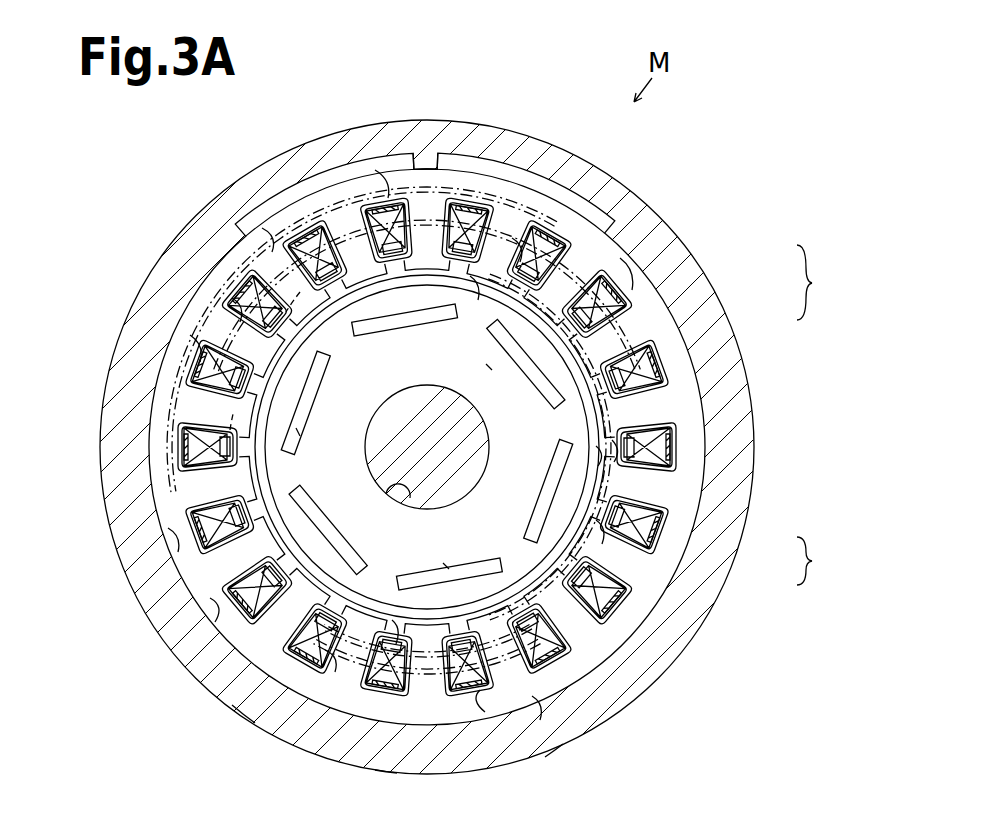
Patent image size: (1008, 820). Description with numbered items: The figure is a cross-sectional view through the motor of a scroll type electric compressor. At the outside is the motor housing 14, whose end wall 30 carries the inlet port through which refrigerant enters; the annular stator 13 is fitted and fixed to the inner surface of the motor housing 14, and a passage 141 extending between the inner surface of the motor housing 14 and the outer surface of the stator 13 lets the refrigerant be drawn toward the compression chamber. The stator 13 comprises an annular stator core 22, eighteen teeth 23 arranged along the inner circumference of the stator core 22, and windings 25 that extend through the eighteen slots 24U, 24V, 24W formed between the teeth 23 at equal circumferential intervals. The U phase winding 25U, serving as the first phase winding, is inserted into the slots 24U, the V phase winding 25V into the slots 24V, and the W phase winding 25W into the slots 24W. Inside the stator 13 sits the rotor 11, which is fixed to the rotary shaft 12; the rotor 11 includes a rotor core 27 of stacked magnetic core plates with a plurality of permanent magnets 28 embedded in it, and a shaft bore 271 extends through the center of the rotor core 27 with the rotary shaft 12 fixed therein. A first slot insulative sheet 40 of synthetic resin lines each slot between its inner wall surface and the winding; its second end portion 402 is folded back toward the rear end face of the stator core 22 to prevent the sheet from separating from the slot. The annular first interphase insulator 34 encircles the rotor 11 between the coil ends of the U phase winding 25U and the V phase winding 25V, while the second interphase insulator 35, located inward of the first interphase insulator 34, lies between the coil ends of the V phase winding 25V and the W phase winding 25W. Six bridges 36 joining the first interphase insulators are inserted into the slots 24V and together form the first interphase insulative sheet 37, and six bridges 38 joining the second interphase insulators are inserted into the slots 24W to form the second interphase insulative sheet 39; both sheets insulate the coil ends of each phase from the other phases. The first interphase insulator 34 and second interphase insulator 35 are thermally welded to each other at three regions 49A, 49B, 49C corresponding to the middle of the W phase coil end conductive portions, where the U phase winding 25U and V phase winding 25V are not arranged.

The rotor 11 is at (558, 444).
The rotary shaft 12 is at (418, 388).
The stator 13 is at (446, 445).
The motor housing 14 is at (735, 393).
The stator core 22 is at (640, 305).
The teeth 23 is at (428, 282).
The slot 24U is at (385, 195).
The slot 24V is at (518, 240).
The slot 24W is at (240, 300).
The windings 25 is at (425, 445).
The U phase winding 25U is at (630, 290).
The V phase winding 25V is at (322, 236).
The W phase winding 25W is at (440, 216).
The rotor core 27 is at (578, 525).
The permanent magnets 28 is at (536, 434).
The end wall 30 is at (473, 447).
The first interphase insulator 34 is at (138, 384).
The second interphase insulator 35 is at (329, 357).
The bridges 36 is at (300, 228).
The first interphase insulative sheet 37 is at (232, 412).
The bridges 38 is at (237, 262).
The second interphase insulative sheet 39 is at (303, 312).
The first slot insulative sheet 40 is at (356, 758).
The thermally welded region 49A is at (505, 380).
The thermally welded region 49B is at (446, 568).
The thermally welded region 49C is at (298, 432).
The passage 141 is at (446, 152).
The shaft bore 271 is at (400, 503).
The second end portion 402 is at (250, 722).